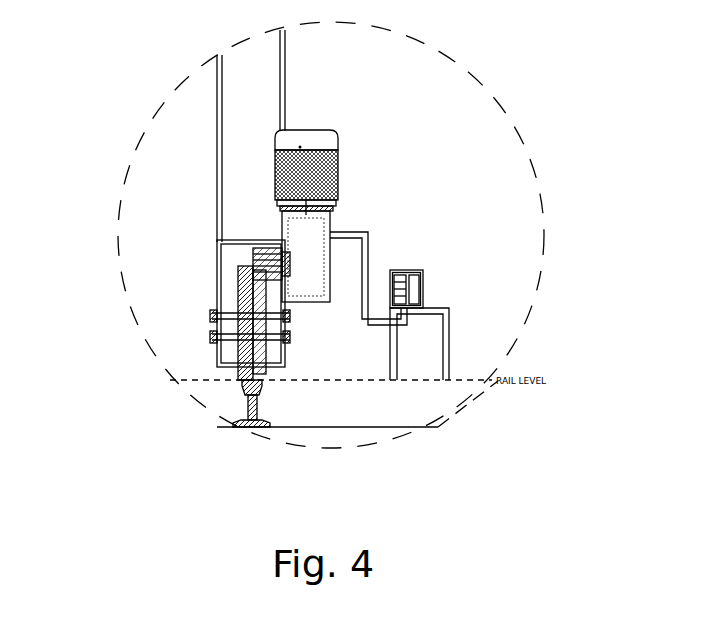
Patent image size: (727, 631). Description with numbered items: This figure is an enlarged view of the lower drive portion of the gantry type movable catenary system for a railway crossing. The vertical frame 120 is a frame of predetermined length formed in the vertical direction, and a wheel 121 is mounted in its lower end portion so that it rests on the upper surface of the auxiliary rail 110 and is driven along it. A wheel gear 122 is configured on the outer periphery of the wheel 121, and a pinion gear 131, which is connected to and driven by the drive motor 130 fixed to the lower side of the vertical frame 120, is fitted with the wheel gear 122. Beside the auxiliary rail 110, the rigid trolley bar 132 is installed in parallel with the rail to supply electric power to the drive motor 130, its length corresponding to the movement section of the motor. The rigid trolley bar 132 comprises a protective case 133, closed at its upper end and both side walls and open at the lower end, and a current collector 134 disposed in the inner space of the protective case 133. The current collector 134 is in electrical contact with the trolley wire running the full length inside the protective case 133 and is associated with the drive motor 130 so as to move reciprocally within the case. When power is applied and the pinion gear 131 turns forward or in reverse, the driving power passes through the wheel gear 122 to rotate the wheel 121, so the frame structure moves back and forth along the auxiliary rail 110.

The auxiliary rail 110 is at (244, 404).
The vertical frame 120 is at (217, 184).
The wheel 121 is at (217, 352).
The wheel gear 122 is at (266, 383).
The drive motor 130 is at (338, 165).
The pinion gear 131 is at (253, 260).
The rigid trolley bar 132 is at (413, 270).
The protective case 133 is at (424, 290).
The current collector 134 is at (397, 270).